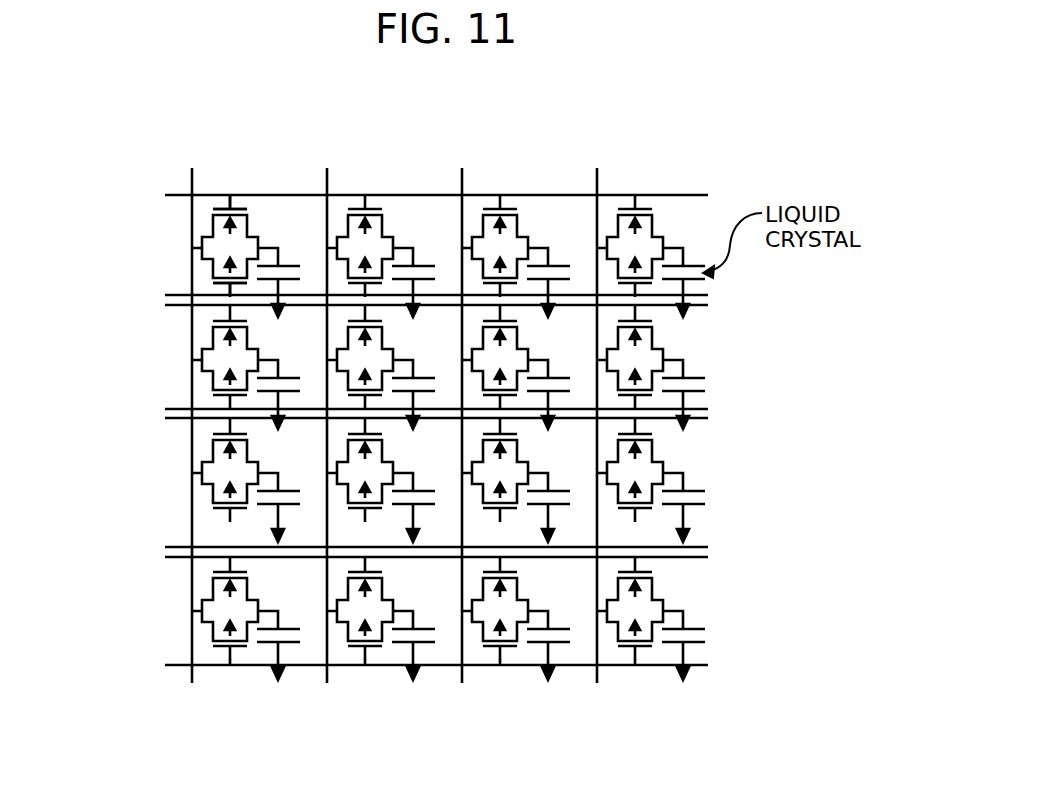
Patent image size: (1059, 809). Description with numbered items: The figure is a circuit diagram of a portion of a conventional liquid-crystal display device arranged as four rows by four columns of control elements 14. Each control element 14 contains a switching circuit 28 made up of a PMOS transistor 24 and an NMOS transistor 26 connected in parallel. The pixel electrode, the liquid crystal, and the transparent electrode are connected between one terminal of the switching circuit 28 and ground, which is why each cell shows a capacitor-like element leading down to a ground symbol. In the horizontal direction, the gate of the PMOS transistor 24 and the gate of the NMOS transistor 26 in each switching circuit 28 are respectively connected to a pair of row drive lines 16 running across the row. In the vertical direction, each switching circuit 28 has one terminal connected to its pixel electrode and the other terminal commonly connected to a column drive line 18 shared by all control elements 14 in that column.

The control element 14 is at (387, 402).
The row drive lines 16 is at (693, 194).
The column drive line 18 is at (388, 462).
The PMOS transistor 24 is at (210, 264).
The NMOS transistor 26 is at (208, 227).
The switching circuit 28 is at (225, 221).